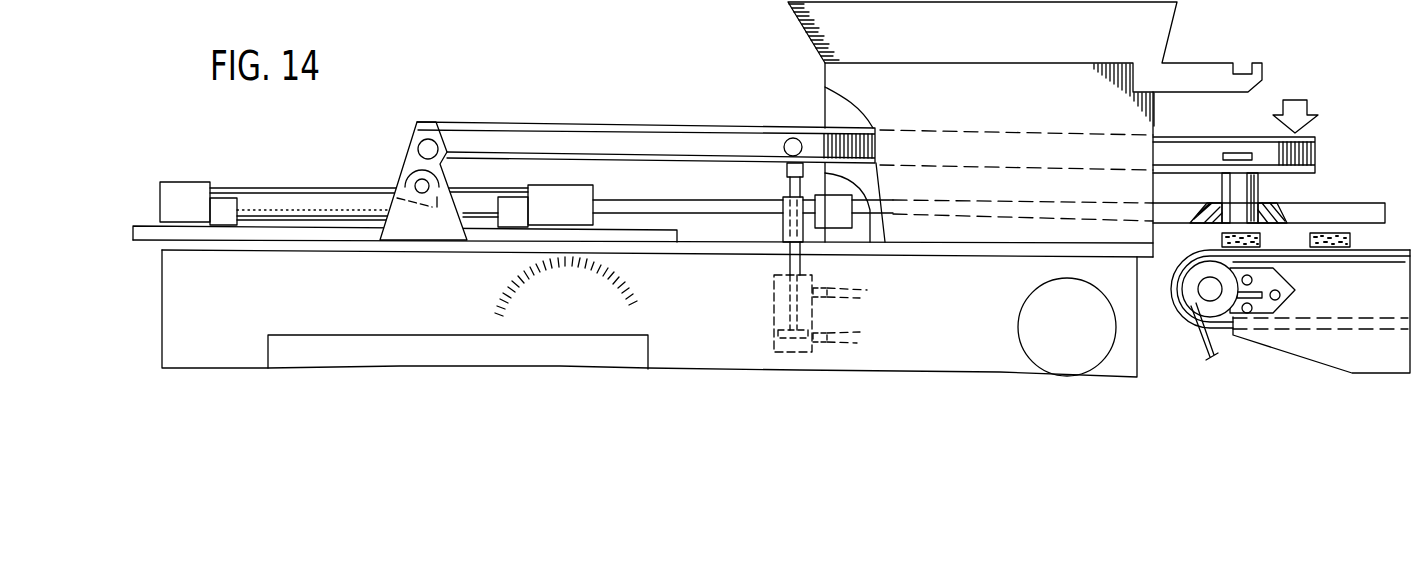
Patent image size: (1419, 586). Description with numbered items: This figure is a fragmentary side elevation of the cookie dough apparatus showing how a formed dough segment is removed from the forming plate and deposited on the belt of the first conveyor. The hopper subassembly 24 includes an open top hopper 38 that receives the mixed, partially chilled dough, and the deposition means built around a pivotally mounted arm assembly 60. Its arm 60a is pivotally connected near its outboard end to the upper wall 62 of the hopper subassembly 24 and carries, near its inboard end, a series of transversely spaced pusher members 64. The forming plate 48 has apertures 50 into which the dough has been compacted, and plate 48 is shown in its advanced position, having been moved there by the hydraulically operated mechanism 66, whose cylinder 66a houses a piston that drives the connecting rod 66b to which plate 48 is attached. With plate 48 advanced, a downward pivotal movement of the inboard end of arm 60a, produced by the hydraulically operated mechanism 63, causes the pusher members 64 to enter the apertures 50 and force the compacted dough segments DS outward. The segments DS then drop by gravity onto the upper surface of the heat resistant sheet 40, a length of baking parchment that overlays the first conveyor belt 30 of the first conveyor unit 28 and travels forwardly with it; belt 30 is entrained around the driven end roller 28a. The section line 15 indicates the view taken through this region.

The section line 15- 15 is at (1393, 60).
The hopper subassembly 24 is at (806, 80).
The first conveyor unit 28 is at (1292, 342).
The end roller 28a is at (1197, 305).
The first conveyor belt 30 is at (1342, 318).
The hopper 38 is at (815, 33).
The heat resistant sheet material 40 is at (1168, 282).
The forming plate 48 is at (1350, 204).
The apertures 50 is at (1258, 196).
The arm assembly 60 is at (472, 118).
The arm 60a is at (578, 130).
The upper wall 62 is at (228, 243).
The hydraulically operated mechanism 63 is at (778, 261).
The pusher members 64 is at (1222, 190).
The hydraulically operated mechanism 66 is at (248, 186).
The cylinder 66a is at (323, 190).
The connecting rod 66b is at (710, 207).
The dough segments DS is at (1222, 241).